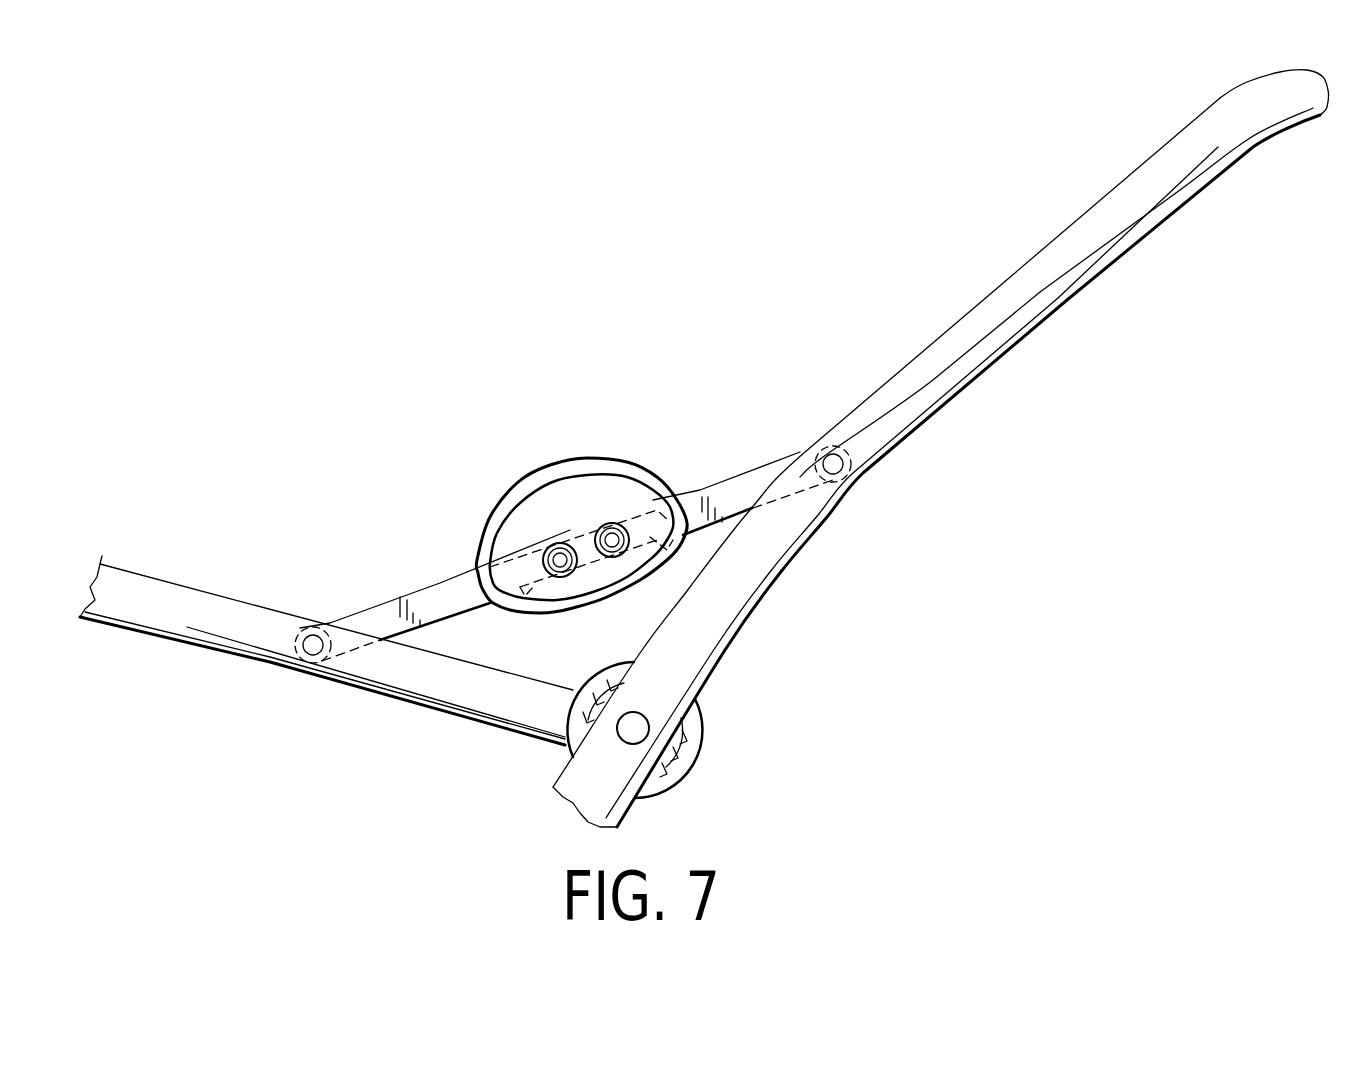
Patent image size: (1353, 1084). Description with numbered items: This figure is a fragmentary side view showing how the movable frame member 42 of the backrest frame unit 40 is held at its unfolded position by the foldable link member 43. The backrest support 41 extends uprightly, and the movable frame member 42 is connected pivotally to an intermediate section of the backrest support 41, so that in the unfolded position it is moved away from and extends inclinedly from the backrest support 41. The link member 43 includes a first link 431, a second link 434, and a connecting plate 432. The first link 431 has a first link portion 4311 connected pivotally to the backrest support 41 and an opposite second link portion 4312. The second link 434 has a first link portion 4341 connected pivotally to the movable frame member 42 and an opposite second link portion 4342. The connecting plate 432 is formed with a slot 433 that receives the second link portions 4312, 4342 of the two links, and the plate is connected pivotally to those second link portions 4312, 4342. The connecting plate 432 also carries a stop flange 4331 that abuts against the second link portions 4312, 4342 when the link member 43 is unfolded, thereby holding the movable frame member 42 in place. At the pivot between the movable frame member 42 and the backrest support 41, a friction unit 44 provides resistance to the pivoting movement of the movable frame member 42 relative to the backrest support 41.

The backrest frame unit 40 is at (704, 449).
The backrest support 41 is at (742, 612).
The movable frame member 42 is at (410, 687).
The foldable link member 43 is at (648, 458).
The first link 431 is at (750, 480).
The first link portion 4311 is at (812, 457).
The second link portion 4312 is at (677, 557).
The connecting plate 432 is at (573, 460).
The slot 433 is at (583, 553).
The stop flange 4331 is at (513, 560).
The second link 434 is at (377, 613).
The first link portion 4341 is at (327, 623).
The second link portion 4342 is at (522, 590).
The friction unit 44 is at (700, 718).